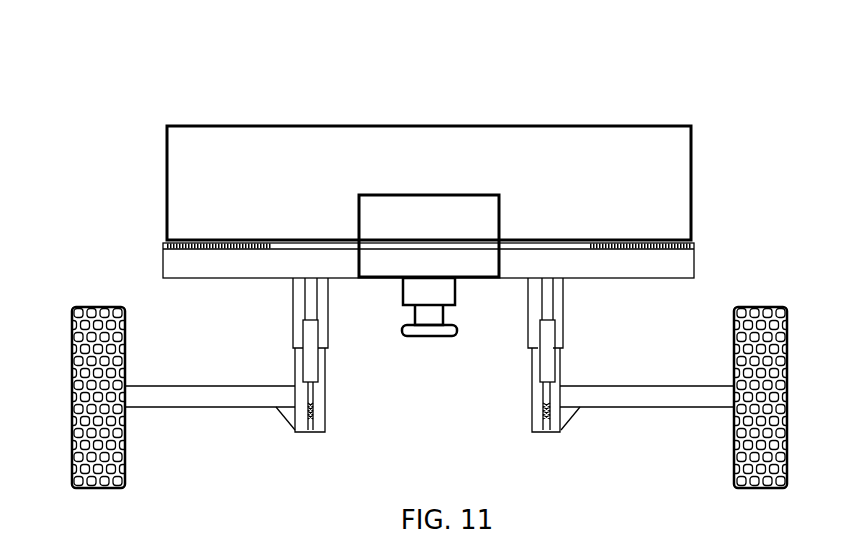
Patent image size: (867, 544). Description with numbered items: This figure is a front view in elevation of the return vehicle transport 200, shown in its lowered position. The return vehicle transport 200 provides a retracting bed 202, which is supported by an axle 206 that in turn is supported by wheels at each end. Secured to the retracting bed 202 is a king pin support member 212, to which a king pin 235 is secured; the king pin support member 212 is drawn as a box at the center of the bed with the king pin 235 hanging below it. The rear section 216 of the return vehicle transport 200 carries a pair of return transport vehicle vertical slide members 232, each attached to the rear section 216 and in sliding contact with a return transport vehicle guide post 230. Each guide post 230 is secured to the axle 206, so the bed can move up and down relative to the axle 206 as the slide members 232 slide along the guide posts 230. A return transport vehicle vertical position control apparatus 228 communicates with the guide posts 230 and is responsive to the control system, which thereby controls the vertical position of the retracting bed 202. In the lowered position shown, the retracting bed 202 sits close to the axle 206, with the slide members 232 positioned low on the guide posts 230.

The return vehicle transport 200 is at (532, 65).
The retracting bed 202 is at (138, 262).
The axle 206 is at (197, 404).
The king pin support member 212 is at (400, 225).
The rear section 216 is at (697, 258).
The return transport vehicle vertical position control apparatus 228 is at (310, 366).
The return transport vehicle guide post 230 is at (311, 428).
The return transport vehicle vertical slide member 232 is at (291, 297).
The king pin 235 is at (452, 337).